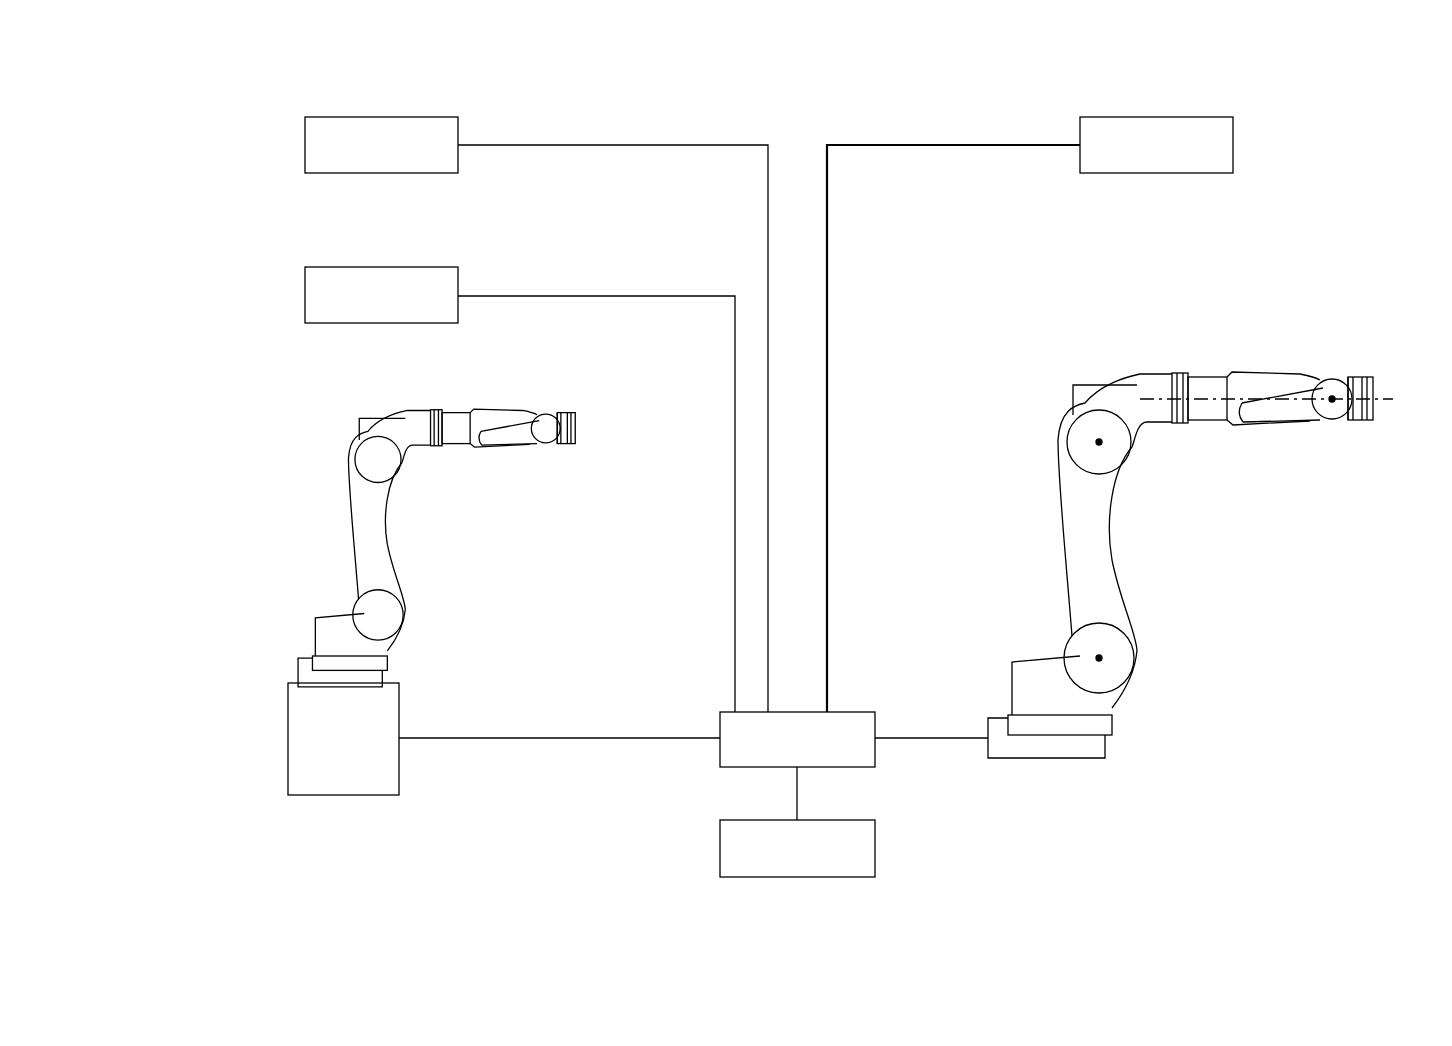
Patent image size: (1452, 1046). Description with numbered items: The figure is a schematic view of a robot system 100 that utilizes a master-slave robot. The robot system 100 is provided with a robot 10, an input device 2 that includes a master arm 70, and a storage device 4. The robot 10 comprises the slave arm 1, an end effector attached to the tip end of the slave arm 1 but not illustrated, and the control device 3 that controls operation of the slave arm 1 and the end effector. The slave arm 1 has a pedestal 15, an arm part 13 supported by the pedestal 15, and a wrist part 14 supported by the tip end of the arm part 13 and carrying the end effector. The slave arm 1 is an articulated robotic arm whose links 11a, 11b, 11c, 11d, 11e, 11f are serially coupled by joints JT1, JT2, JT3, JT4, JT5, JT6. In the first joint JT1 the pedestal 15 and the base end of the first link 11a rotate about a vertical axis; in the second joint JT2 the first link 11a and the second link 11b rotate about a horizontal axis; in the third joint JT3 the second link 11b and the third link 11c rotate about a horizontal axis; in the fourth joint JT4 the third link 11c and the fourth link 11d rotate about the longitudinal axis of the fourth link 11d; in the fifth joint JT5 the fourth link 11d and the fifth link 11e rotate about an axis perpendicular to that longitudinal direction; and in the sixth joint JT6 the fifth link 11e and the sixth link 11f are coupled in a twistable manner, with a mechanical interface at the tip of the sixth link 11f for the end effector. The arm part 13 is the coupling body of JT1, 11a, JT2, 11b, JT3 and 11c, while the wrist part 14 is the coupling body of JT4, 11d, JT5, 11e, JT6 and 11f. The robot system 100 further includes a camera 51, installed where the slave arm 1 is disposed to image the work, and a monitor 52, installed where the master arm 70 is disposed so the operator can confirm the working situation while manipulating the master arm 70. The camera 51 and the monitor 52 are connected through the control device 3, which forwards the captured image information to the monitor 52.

The robot system 100 is at (209, 103).
The robot 10 is at (819, 564).
The slave arm 1 is at (1062, 772).
The input device 2 is at (381, 267).
The control device 3 is at (863, 768).
The storage device 4 is at (877, 843).
The camera 51 is at (1155, 117).
The monitor 52 is at (381, 117).
The master arm 70 is at (273, 541).
The first link 11a is at (1017, 660).
The second link 11b is at (1060, 518).
The third link 11c is at (1140, 375).
The fourth link 11d is at (1248, 372).
The fifth link 11e is at (1352, 375).
The sixth link 11f is at (1370, 425).
The arm part 13 is at (1058, 470).
The wrist part 14 is at (1282, 373).
The pedestal 15 is at (985, 728).
The first joint JT1 is at (1110, 717).
The second joint JT2 is at (1115, 655).
The third joint JT3 is at (1085, 440).
The fourth joint JT4 is at (1178, 372).
The fifth joint JT5 is at (1335, 378).
The sixth joint JT6 is at (1358, 375).